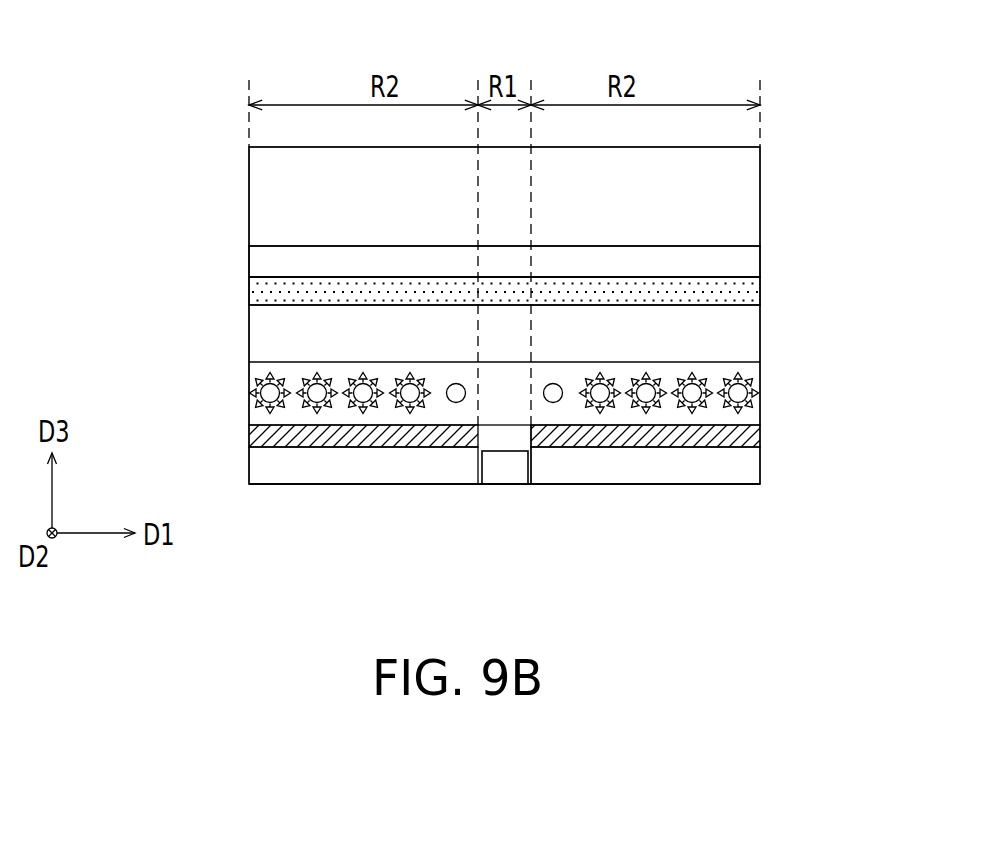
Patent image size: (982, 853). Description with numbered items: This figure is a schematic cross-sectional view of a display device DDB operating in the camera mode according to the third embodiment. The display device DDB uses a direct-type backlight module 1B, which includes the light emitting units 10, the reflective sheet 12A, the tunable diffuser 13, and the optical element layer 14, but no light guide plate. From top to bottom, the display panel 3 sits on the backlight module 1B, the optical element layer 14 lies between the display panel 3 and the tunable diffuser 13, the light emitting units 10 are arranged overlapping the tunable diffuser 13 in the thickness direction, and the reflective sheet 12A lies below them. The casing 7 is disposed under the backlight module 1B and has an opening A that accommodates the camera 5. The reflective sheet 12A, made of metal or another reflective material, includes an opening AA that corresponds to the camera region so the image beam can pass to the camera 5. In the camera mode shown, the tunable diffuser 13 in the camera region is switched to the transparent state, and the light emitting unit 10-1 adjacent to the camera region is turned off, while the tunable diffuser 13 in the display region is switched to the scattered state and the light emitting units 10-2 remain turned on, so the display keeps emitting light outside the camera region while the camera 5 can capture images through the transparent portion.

The display device DDB is at (99, 5).
The backlight module 1B is at (99, 135).
The display panel 3 is at (745, 203).
The optical element layer 14 is at (745, 262).
The tunable diffuser 13 is at (745, 290).
The light emitting units 10 is at (519, 292).
The light emitting unit 10-1 is at (547, 378).
The light emitting unit 10-2 is at (404, 373).
The reflective sheet 12A is at (745, 434).
The casing 7 is at (745, 470).
The camera 5 is at (493, 468).
The opening AA is at (531, 430).
The opening A is at (516, 466).